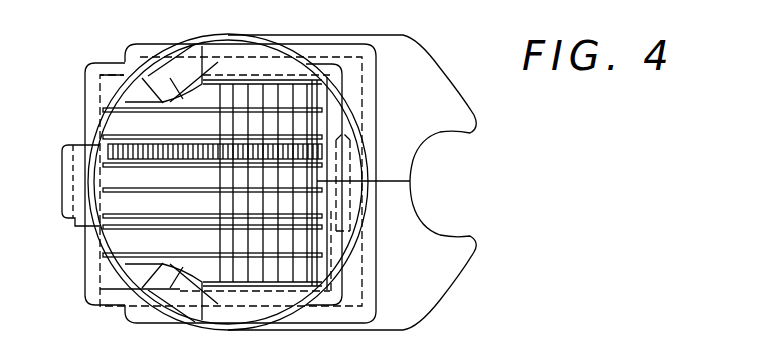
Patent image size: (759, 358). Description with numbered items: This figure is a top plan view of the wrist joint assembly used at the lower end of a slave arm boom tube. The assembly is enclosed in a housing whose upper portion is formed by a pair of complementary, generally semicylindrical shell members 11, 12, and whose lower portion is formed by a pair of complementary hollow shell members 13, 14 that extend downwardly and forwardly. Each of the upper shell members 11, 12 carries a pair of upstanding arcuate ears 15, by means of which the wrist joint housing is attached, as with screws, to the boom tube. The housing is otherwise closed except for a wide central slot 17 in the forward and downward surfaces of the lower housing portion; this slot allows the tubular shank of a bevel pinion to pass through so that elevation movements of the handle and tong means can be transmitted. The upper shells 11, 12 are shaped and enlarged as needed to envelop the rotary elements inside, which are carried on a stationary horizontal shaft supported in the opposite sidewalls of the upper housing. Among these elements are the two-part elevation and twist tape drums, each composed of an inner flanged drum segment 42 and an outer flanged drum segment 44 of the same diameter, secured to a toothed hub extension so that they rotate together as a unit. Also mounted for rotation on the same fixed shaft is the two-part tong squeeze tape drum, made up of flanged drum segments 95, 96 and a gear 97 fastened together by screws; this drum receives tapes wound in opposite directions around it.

The semicylindrical shell member 11 is at (117, 278).
The semicylindrical shell member 12 is at (117, 82).
The hollow shell member 13 is at (423, 291).
The hollow shell member 14 is at (416, 63).
The upstanding arcuate ears 15 is at (188, 62).
The wide central slot 17 is at (451, 155).
The inner flanged drum segment 42 is at (123, 126).
The outer flanged drum segment 44 is at (119, 97).
The flanged drum segment 95 is at (124, 203).
The flanged drum segment 96 is at (118, 174).
The gear 97 is at (118, 152).